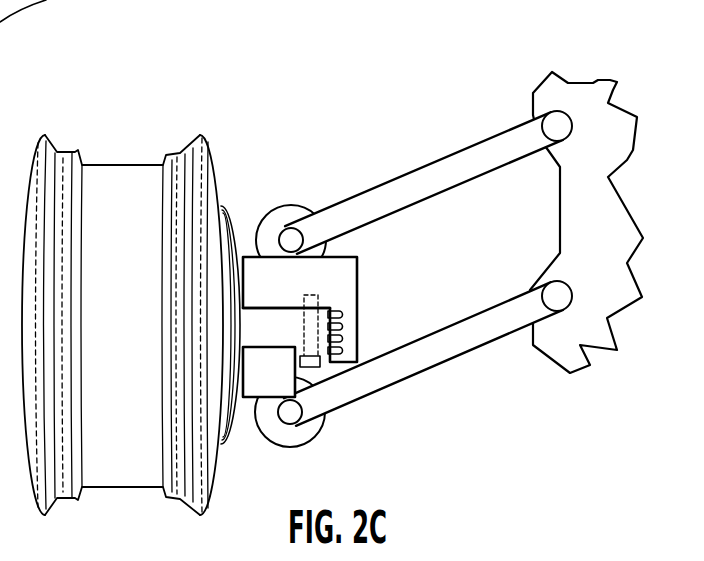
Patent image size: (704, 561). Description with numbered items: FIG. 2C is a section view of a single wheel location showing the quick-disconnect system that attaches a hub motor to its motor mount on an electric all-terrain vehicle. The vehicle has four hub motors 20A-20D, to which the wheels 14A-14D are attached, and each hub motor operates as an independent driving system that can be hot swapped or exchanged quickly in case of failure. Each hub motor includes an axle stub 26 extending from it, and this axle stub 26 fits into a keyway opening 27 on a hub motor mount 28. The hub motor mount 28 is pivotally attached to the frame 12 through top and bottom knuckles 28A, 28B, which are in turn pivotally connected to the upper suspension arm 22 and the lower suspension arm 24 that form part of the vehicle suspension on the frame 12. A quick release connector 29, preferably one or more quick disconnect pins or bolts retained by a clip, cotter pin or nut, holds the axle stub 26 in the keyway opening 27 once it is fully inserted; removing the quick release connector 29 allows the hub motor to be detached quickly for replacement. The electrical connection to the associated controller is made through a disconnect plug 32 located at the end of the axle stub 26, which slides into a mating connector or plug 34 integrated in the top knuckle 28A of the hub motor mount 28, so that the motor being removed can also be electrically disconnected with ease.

The frame 12 is at (580, 103).
The wheels 14A-14D is at (77, 154).
The hub motors 20A-20D is at (235, 213).
The upper suspension arm 22 is at (407, 178).
The lower suspension arm 24 is at (432, 368).
The axle stub 26 is at (268, 336).
The keyway opening 27 is at (268, 308).
The hub motor mount 28 is at (353, 266).
The top knuckle 28A is at (292, 216).
The bottom knuckle 28B is at (305, 435).
The quick release connector 29 is at (312, 363).
The disconnect plug 32 is at (328, 306).
The mating connector or plug 34 is at (342, 326).